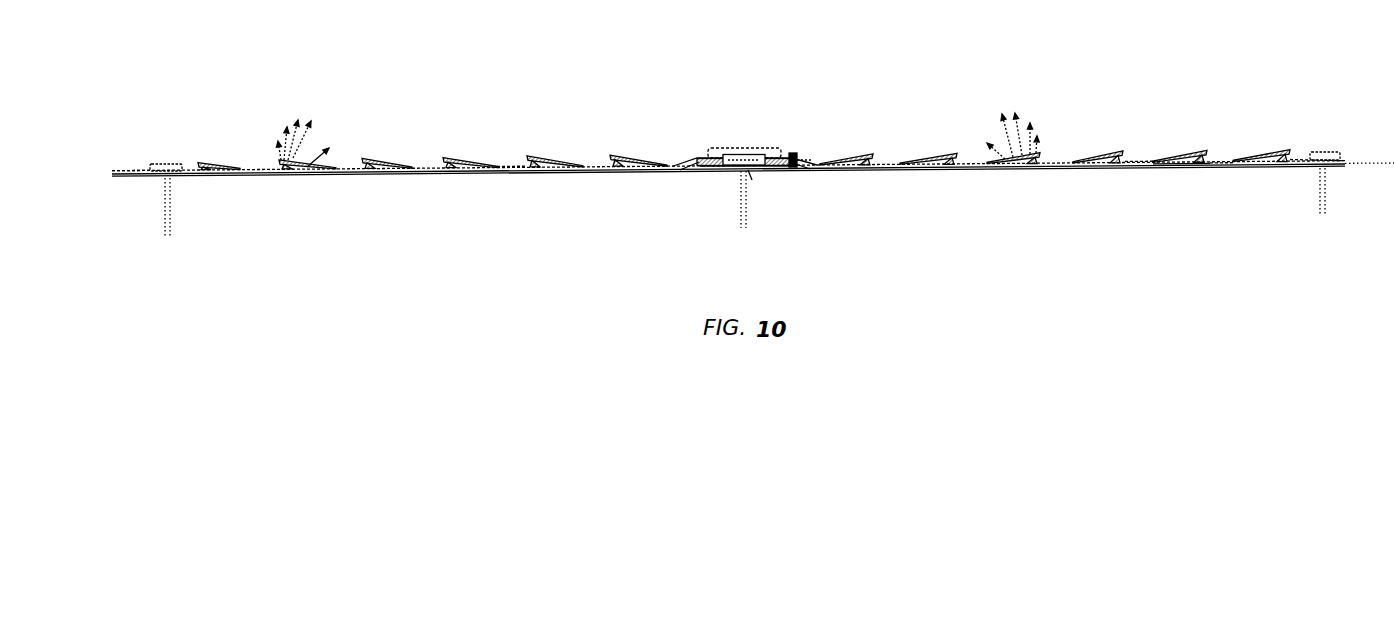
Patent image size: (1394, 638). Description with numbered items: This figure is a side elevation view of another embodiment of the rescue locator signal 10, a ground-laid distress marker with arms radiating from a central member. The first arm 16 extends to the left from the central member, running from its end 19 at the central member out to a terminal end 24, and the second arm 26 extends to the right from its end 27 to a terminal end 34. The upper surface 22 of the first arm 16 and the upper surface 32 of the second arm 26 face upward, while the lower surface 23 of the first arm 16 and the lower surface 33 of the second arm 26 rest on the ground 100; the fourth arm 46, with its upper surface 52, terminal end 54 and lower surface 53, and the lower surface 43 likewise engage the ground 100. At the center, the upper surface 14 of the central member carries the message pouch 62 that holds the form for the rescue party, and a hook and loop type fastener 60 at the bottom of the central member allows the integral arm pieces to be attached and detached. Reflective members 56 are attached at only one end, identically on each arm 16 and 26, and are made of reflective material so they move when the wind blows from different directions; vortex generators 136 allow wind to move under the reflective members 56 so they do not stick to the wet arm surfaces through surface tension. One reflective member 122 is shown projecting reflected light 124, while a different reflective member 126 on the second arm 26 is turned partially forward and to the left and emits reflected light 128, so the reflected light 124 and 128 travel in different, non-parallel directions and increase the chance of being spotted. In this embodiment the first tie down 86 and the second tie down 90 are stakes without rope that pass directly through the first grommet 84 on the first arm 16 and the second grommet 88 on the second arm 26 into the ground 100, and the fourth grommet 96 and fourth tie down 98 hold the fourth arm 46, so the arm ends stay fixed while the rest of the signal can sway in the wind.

The rescue locator signal 10 is at (744, 144).
The upper surface of the central member 14 is at (786, 145).
The first arm 16 is at (266, 170).
The end of the first arm 19 is at (690, 162).
The upper surface of the first arm 22 is at (430, 165).
The lower surface of the first arm 23 is at (391, 178).
The terminal end of the first arm 24 is at (147, 172).
The second arm 26 is at (1142, 163).
The end of the second arm 27 is at (803, 163).
The upper surface of the second arm 32 is at (1226, 153).
The lower surface of the second arm 33 is at (1169, 170).
The terminal end of the second arm 34 is at (1340, 163).
The lower surface 43 is at (690, 210).
The lower surface of the fourth arm 53 is at (716, 182).
The fourth arm 46 is at (778, 172).
The upper surface of the fourth arm 52 is at (797, 157).
The terminal end of the fourth arm 54 is at (763, 172).
The reflective members 56 is at (553, 162).
The hook and loop type fastener 60 is at (700, 171).
The message pouch 62 is at (772, 150).
The first grommet 84 is at (149, 168).
The first tie down 86 is at (167, 236).
The second grommet 88 is at (1348, 158).
The second tie down 90 is at (1325, 198).
The fourth grommet 96 is at (752, 180).
The fourth tie down 98 is at (743, 230).
The ground 100 is at (1373, 153).
The reflective member 122 is at (283, 160).
The reflected light 124 is at (323, 135).
The reflective member 126 is at (1043, 150).
The reflected light 128 is at (993, 133).
The vortex generators 136 is at (533, 172).